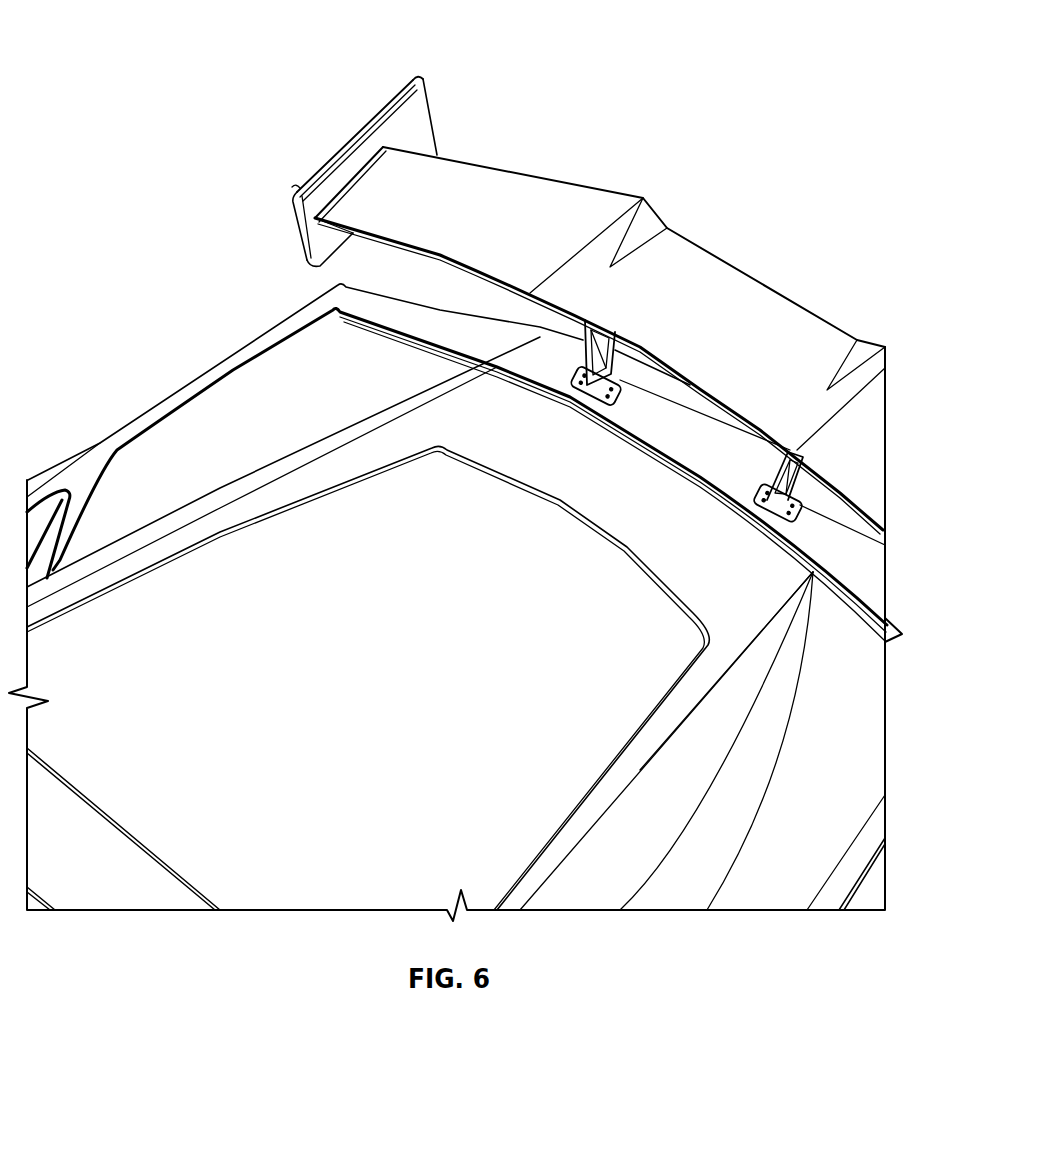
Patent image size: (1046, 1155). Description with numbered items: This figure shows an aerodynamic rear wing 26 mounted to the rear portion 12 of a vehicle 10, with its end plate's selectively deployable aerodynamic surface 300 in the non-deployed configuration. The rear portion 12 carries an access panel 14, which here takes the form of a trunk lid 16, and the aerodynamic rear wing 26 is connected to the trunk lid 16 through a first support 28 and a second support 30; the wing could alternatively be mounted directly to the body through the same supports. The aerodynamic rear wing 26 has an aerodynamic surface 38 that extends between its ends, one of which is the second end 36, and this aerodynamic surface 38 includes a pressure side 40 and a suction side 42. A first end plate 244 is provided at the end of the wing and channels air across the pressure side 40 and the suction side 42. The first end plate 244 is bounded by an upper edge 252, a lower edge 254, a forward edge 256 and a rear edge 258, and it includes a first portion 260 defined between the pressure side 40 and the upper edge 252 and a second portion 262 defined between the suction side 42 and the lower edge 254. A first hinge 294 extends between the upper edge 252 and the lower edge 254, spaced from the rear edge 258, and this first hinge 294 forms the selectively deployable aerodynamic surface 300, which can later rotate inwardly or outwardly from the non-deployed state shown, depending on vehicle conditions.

The vehicle 10 is at (193, 44).
The rear portion 12 is at (877, 883).
The access panel 14 is at (483, 413).
The trunk lid 16 is at (750, 590).
The aerodynamic rear wing 26 is at (558, 297).
The first support 28 is at (584, 333).
The second support 30 is at (767, 473).
The second end 36 is at (857, 455).
The aerodynamic surface 38 is at (613, 218).
The pressure side 40 is at (852, 388).
The suction side 42 is at (697, 385).
The first end plate 244 is at (361, 172).
The upper edge 252 is at (323, 157).
The lower edge 254 is at (341, 252).
The forward edge 256 is at (300, 238).
The rear edge 258 is at (437, 140).
The first portion 260 is at (363, 155).
The second portion 262 is at (333, 235).
The first hinge 294 is at (412, 82).
The selectively deployable aerodynamic surface 300 is at (425, 92).